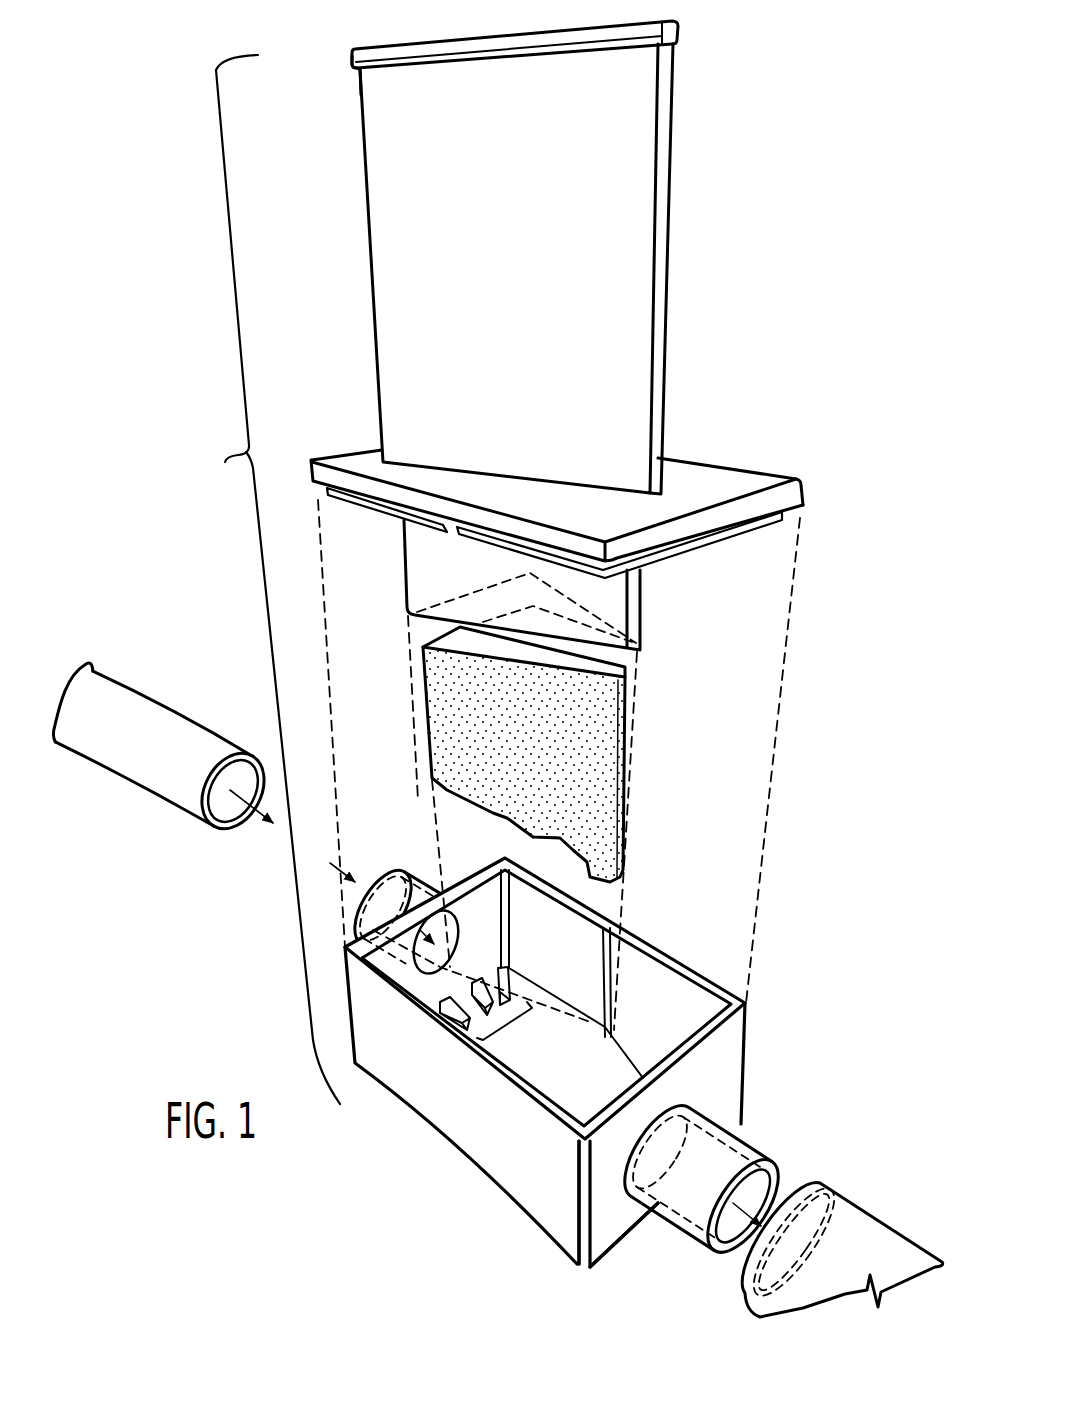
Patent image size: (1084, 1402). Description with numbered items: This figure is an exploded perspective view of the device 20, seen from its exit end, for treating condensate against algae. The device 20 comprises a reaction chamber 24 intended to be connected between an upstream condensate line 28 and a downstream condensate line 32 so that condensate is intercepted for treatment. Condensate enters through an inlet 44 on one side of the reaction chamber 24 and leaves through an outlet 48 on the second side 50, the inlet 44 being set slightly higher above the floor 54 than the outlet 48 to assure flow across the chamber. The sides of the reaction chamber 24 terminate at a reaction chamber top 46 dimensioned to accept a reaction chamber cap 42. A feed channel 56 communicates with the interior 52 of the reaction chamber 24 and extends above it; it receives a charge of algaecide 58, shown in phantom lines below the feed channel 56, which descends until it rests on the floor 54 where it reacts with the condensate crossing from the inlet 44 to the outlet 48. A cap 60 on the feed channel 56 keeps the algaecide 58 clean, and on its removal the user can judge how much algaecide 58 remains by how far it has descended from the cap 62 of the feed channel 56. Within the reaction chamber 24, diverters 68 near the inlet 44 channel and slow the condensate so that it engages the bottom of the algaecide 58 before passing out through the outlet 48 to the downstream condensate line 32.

The device 20 is at (277, 579).
The reaction chamber 24 is at (545, 1055).
The upstream condensate line 28 is at (173, 777).
The downstream condensate line 32 is at (851, 1250).
The reaction chamber cap 42 is at (367, 465).
The inlet 44 is at (388, 893).
The reaction chamber top 46 is at (475, 876).
The outlet 48 is at (747, 1152).
The second side 50 is at (610, 1203).
The interior 52 is at (649, 1003).
The floor 54 is at (563, 1093).
The feed channel 56 is at (530, 275).
The algaecide 58 is at (563, 797).
The cap 60 is at (411, 41).
The cap 62 is at (405, 68).
The diverters 68 is at (503, 1027).